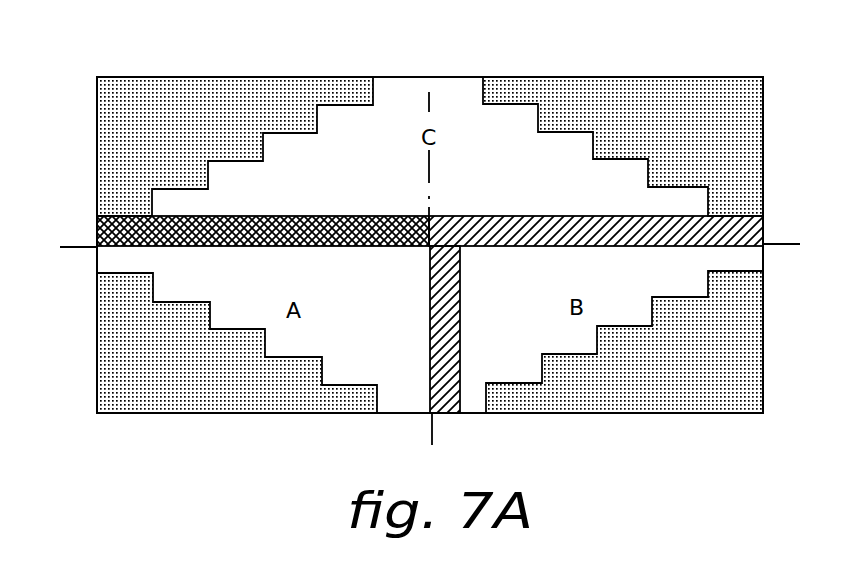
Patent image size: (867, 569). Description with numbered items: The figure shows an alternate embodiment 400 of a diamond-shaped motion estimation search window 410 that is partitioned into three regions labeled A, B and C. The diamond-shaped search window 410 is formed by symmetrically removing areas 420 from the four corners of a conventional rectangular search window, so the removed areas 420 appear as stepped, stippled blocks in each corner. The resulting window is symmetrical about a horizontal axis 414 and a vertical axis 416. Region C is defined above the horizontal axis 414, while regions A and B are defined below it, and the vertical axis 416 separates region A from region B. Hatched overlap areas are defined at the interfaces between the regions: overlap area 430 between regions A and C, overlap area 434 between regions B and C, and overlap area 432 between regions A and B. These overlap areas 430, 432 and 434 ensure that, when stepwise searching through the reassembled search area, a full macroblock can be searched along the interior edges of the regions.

The electrical connector assembly 400 is at (557, 77).
The diamond-shaped search window 410 is at (524, 172).
The horizontal axis 414 is at (67, 248).
The vertical axis 416 is at (429, 65).
The removed areas 420 is at (242, 95).
The overlap area 430 is at (350, 216).
The overlap area 432 is at (458, 298).
The overlap area 434 is at (527, 216).